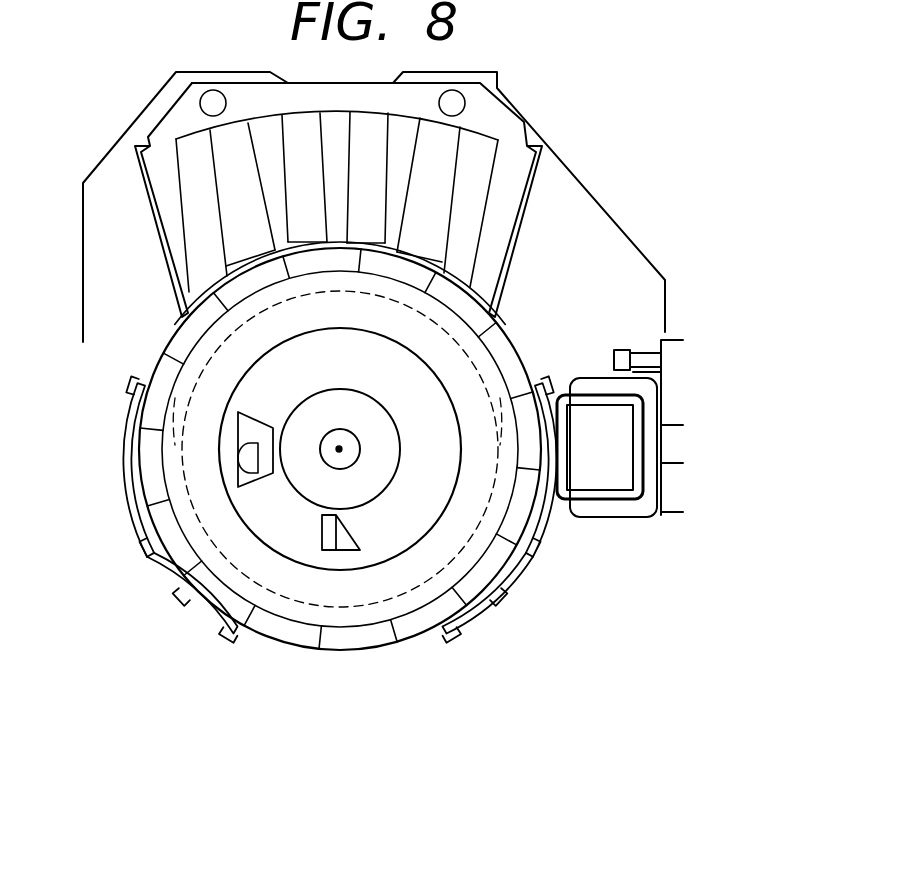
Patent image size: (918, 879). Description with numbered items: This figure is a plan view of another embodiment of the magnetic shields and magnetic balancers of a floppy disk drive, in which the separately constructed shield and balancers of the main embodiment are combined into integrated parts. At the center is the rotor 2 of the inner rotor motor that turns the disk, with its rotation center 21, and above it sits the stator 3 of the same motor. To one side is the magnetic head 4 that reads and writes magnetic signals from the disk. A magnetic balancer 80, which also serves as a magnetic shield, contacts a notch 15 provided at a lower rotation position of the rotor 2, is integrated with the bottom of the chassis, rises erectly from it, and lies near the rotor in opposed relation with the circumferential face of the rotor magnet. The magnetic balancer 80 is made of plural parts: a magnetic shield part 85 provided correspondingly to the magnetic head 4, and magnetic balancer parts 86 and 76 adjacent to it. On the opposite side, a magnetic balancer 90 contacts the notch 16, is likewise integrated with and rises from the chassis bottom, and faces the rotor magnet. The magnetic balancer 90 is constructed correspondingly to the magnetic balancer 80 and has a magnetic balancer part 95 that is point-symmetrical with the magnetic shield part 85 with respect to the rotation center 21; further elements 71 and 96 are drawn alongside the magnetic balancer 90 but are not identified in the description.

The rotor 2 is at (352, 657).
The stator 3 is at (547, 131).
The magnetic head 4 is at (657, 527).
The notch 15 is at (470, 404).
The notch 16 is at (202, 410).
The rotation center 21 is at (339, 449).
The lower left clip piece 71 is at (170, 595).
The magnetic balancer part 76 is at (480, 612).
The magnetic balancer 80 is at (565, 551).
The magnetic shield part 85 is at (553, 517).
The magnetic balancer part 86 is at (520, 573).
The magnetic balancer 90 is at (143, 537).
The magnetic balancer part 95 is at (128, 462).
The clip tab 96 is at (160, 567).